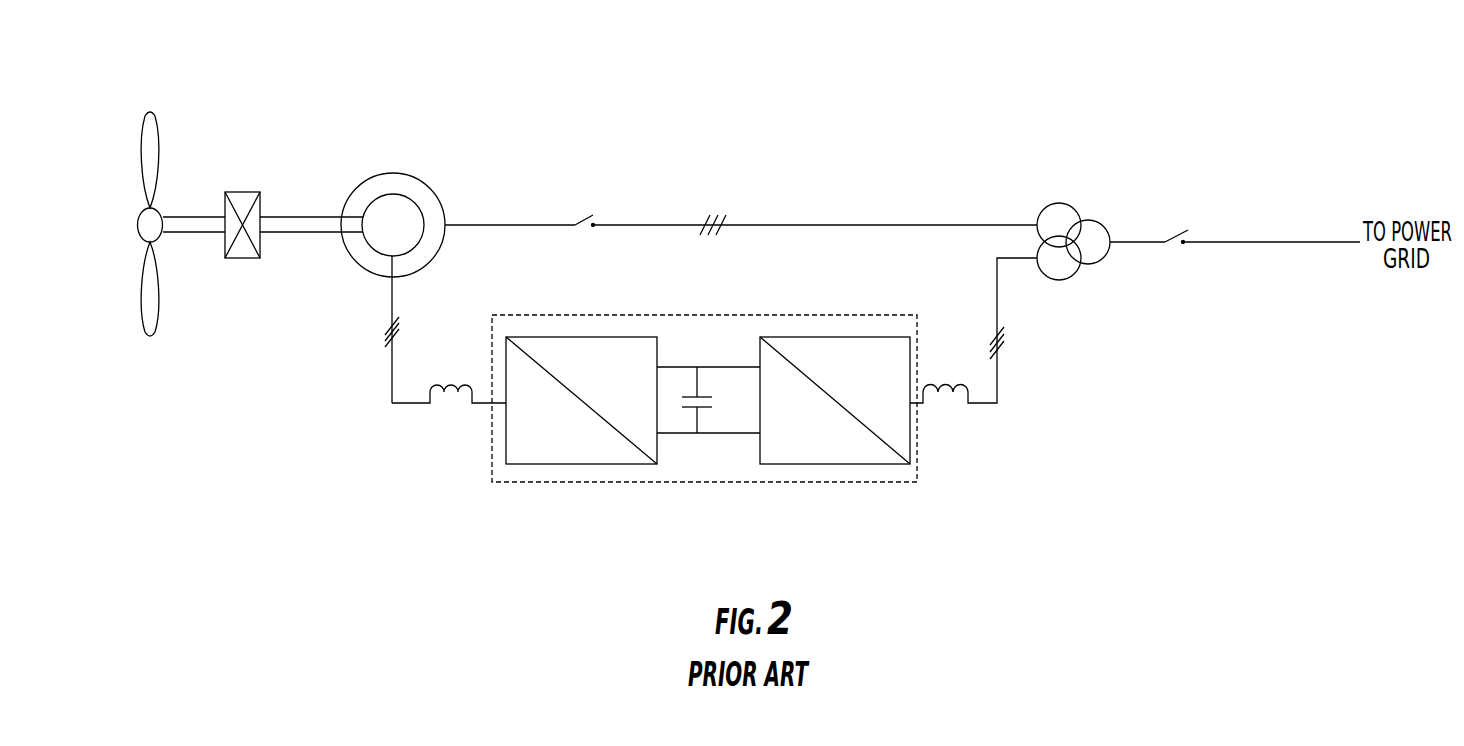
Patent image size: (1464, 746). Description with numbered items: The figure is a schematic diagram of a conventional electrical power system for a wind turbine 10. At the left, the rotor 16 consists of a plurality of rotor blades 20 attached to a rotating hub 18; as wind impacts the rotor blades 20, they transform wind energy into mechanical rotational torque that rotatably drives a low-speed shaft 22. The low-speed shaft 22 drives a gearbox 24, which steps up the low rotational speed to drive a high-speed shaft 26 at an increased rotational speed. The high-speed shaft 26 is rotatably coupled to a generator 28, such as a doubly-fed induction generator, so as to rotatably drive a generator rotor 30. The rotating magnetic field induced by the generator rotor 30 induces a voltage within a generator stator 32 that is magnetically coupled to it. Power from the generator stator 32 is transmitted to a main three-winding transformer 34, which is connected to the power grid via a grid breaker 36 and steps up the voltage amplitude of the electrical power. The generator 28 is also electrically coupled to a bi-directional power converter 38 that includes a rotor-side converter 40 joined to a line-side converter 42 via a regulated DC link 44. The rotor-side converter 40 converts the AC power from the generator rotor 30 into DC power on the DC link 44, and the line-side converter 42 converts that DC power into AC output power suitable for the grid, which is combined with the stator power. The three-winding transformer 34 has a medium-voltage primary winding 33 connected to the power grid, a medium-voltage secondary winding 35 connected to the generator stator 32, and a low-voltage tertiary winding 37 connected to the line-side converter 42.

The wind turbine 10 is at (146, 210).
The rotor 16 is at (135, 247).
The rotating hub 18 is at (136, 230).
The rotor blades 20 is at (152, 148).
The low-speed shaft 22 is at (178, 229).
The gearbox 24 is at (242, 192).
The high-speed shaft 26 is at (276, 233).
The generator 28 is at (392, 193).
The generator rotor 30 is at (417, 203).
The generator stator 32 is at (377, 274).
The primary winding 33 is at (1093, 267).
The three-winding transformer 34 is at (1044, 234).
The secondary winding 35 is at (1038, 215).
The grid breaker 36 is at (1196, 230).
The tertiary winding 37 is at (1065, 282).
The bi-directional power converter 38 is at (764, 406).
The rotor-side converter 40 is at (565, 465).
The line-side converter 42 is at (850, 465).
The DC link 44 is at (715, 420).